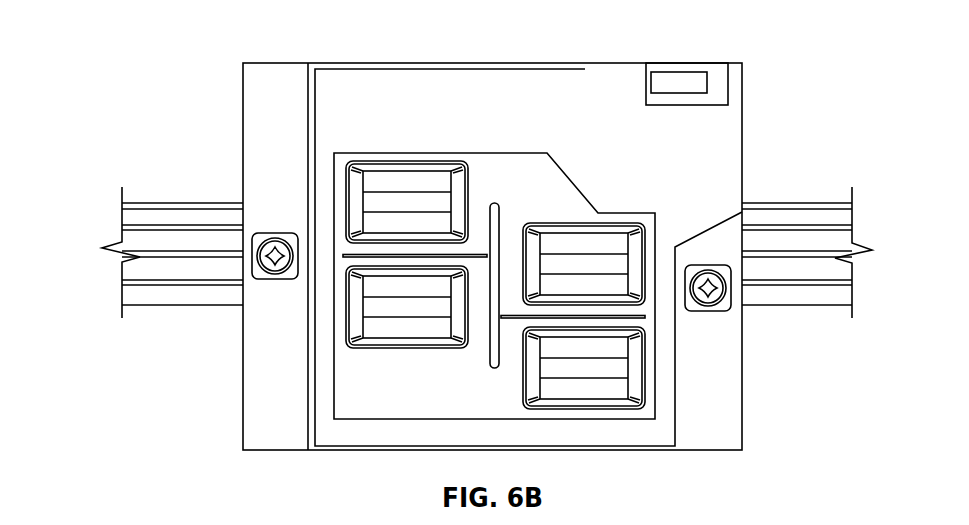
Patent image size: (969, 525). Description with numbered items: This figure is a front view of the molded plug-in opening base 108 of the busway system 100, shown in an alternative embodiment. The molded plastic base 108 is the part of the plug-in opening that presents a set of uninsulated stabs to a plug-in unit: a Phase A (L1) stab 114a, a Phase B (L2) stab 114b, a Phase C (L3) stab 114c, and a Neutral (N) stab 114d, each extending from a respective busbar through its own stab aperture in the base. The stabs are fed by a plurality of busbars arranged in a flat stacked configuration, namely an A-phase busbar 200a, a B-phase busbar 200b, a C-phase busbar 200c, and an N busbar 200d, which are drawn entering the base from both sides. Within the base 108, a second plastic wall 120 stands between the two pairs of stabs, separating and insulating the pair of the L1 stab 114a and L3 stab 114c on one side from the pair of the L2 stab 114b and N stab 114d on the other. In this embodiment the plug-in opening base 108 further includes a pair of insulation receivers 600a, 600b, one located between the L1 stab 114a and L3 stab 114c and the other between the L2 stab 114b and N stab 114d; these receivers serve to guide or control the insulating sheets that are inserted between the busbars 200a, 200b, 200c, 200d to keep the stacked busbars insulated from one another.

The busway system 100 is at (181, 44).
The molded plastic base 108 is at (607, 63).
The second plastic wall 120 is at (500, 213).
The Phase A (L1) stab 114a is at (387, 205).
The Phase B (L2) stab 114b is at (592, 258).
The Phase C (L3) stab 114c is at (387, 308).
The Neutral (N) stab 114d is at (582, 367).
The insulation receiver 600a is at (345, 255).
The insulation receiver 600b is at (645, 317).
The A-phase (L1) busbar 200a is at (165, 213).
The B-phase (L2) busbar 200b is at (135, 240).
The C-phase (L3) busbar 200c is at (135, 270).
The N busbar 200d is at (135, 295).